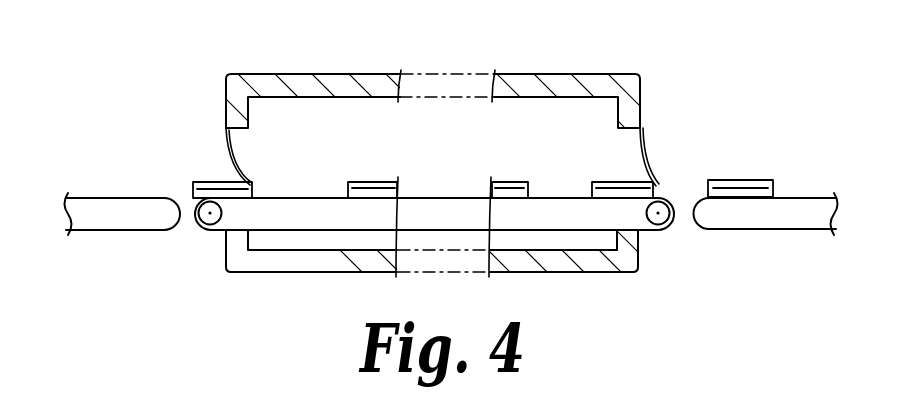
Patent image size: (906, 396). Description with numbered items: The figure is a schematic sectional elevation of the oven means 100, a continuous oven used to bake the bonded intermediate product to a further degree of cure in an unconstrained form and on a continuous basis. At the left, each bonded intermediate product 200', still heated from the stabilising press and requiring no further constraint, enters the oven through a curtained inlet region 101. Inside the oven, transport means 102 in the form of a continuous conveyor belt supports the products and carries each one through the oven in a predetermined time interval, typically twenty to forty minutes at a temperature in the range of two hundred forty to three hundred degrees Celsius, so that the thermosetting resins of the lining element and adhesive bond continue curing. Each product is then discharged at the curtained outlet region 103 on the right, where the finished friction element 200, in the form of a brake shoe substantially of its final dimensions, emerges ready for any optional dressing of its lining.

The oven means 100 is at (316, 58).
The curtained inlet region 101 is at (226, 145).
The transport means 102 is at (205, 222).
The curtained outlet region 103 is at (643, 140).
The finished friction element 200 is at (762, 163).
The bonded intermediate product 200' is at (171, 170).